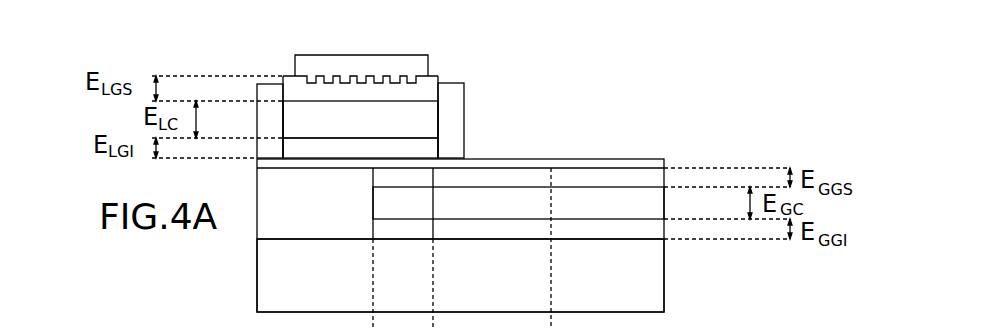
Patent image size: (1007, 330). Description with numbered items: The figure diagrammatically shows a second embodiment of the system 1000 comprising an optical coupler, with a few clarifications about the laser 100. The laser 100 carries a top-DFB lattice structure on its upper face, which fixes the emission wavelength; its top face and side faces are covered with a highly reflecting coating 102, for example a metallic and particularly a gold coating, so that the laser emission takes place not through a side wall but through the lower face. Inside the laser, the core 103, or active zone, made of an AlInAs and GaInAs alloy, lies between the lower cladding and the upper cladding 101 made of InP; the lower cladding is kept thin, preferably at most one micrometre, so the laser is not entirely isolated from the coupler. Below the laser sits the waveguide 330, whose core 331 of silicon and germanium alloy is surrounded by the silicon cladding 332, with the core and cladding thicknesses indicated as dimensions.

The system 1000 is at (170, 57).
The laser 100 is at (490, 90).
The upper cladding 101 is at (425, 148).
The highly reflecting coating 102 is at (272, 92).
The core 103 is at (425, 122).
The waveguide 330 is at (633, 147).
The core 331 is at (655, 197).
The silicon cladding 332 is at (640, 231).